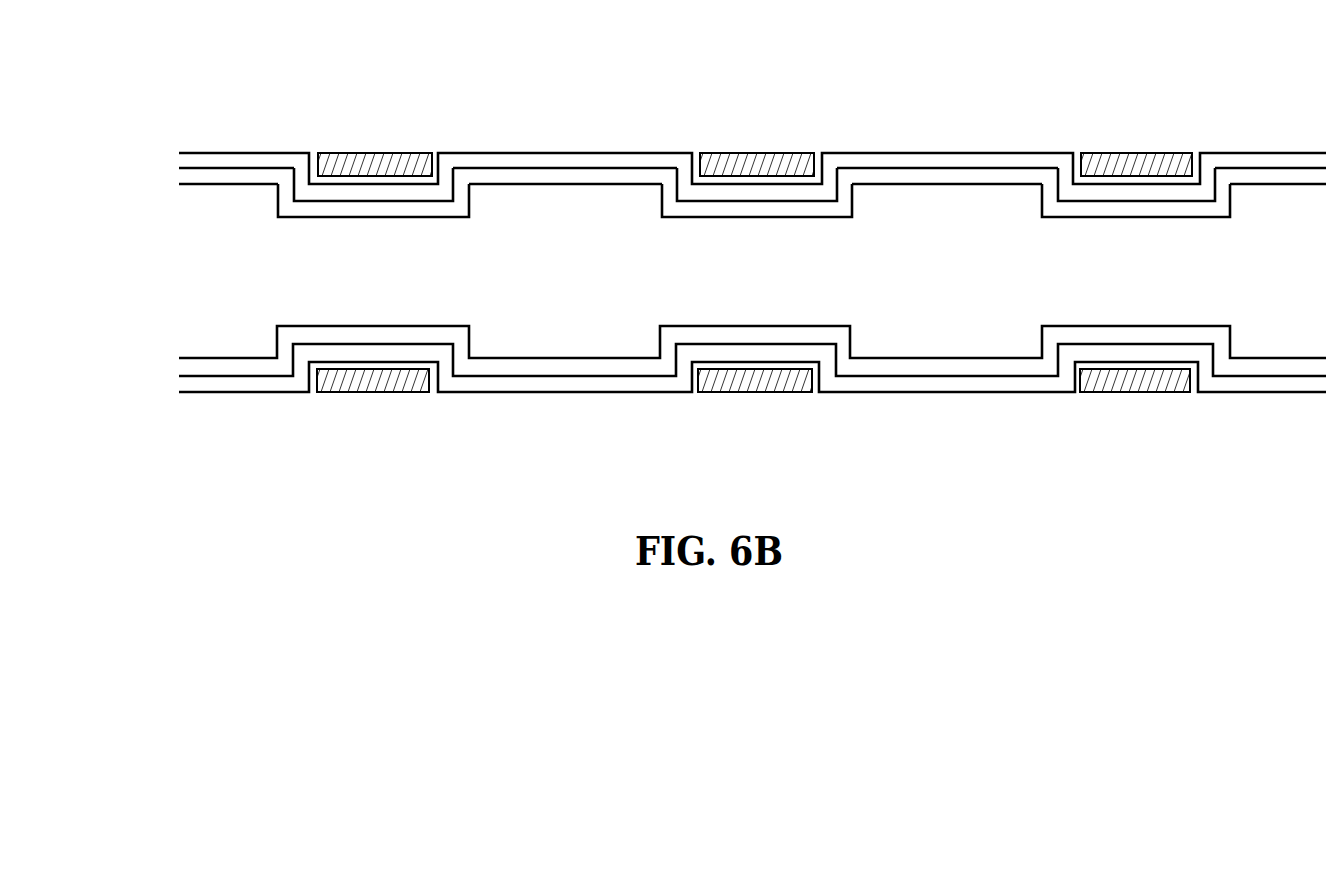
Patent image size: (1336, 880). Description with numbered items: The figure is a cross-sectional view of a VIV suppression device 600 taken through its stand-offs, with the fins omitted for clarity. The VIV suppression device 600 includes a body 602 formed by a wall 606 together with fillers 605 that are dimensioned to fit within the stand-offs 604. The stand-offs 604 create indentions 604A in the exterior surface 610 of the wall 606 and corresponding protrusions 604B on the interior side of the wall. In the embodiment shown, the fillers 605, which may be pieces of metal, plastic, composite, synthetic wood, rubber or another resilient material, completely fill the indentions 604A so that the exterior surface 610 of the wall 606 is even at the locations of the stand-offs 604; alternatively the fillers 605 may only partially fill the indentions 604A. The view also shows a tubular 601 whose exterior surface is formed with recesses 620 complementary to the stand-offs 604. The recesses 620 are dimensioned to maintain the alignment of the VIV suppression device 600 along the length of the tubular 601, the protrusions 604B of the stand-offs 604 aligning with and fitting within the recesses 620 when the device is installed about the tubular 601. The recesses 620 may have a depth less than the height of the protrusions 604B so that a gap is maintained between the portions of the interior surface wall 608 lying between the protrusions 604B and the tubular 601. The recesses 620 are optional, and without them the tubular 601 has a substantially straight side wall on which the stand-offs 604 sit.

The VIV suppression device 600 is at (196, 85).
The tubular 601 is at (173, 202).
The body 602 is at (537, 152).
The stand-offs 604 is at (469, 345).
The indentions 604A is at (698, 152).
The protrusions 604B is at (685, 200).
The fillers 605 is at (360, 390).
The wall 606 is at (238, 162).
The interior surface wall 608 is at (973, 172).
The exterior surface 610 is at (885, 153).
The recesses 620 is at (385, 220).